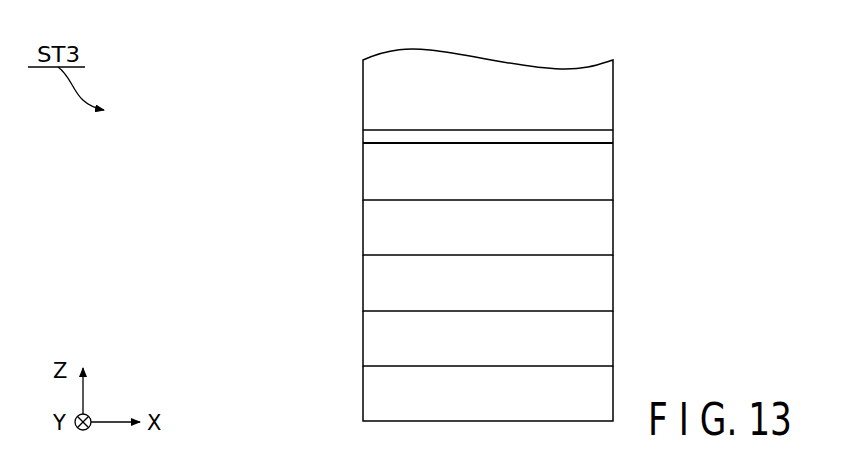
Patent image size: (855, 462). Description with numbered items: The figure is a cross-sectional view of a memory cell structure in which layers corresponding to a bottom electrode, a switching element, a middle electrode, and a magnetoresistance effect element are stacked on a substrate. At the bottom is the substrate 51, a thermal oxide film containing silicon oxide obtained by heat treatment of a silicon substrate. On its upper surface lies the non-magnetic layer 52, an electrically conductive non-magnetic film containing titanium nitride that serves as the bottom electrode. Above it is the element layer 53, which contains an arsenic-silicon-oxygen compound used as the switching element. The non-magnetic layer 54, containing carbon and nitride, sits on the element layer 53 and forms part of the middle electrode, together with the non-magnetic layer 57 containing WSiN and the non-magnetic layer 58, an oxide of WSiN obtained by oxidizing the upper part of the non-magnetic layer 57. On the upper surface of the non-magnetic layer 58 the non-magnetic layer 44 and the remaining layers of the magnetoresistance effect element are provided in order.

The non-magnetic layer 44 is at (363, 90).
The non-magnetic layer 58 is at (363, 140).
The non-magnetic layer 57 is at (363, 175).
The non-magnetic layer 54 is at (363, 230).
The element layer 53 is at (363, 286).
The non-magnetic layer 52 is at (363, 341).
The substrate 51 is at (363, 396).